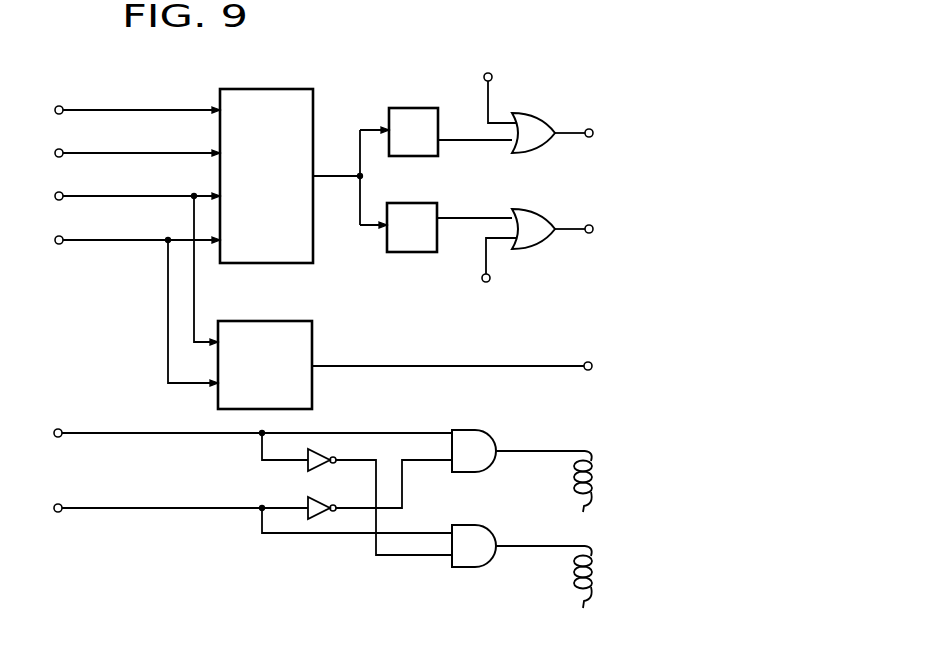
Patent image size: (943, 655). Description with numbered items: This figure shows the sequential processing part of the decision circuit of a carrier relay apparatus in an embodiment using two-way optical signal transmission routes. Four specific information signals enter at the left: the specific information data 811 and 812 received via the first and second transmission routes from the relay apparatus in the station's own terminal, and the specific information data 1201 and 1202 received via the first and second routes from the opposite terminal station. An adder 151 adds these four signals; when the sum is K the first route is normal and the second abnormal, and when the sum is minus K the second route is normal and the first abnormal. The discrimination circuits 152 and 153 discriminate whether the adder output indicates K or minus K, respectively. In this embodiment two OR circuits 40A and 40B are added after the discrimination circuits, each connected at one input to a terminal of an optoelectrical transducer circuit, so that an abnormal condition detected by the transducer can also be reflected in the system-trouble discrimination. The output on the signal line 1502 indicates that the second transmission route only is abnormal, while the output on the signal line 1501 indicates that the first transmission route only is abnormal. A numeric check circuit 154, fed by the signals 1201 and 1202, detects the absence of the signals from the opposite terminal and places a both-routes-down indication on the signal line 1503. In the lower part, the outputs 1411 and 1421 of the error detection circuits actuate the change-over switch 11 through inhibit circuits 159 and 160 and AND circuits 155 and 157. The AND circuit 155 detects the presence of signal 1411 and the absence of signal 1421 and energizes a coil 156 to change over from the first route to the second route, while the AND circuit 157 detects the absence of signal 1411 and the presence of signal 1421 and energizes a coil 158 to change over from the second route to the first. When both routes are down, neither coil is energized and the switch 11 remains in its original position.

The specific information data 811 is at (100, 110).
The specific information data 812 is at (100, 153).
The specific information data 1201 is at (100, 196).
The specific information data 1202 is at (100, 240).
The adder 151 is at (313, 97).
The discrimination circuit 152 is at (424, 108).
The discrimination circuit 153 is at (424, 203).
The OR circuit 40A is at (540, 117).
The OR circuit 40B is at (540, 217).
The signal line 1502 is at (673, 142).
The signal line 1501 is at (666, 238).
The numeric check circuit 154 is at (312, 331).
The signal line 1503 is at (556, 368).
The output of error detection circuit 1411 is at (102, 433).
The output of error detection circuit 1421 is at (102, 508).
The inhibit circuit 159 is at (305, 470).
The inhibit circuit 160 is at (318, 500).
The AND circuit 155 is at (497, 418).
The AND circuit 157 is at (497, 514).
The coil 156 is at (603, 463).
The coil 158 is at (606, 560).
The change-over switch 11 is at (663, 518).